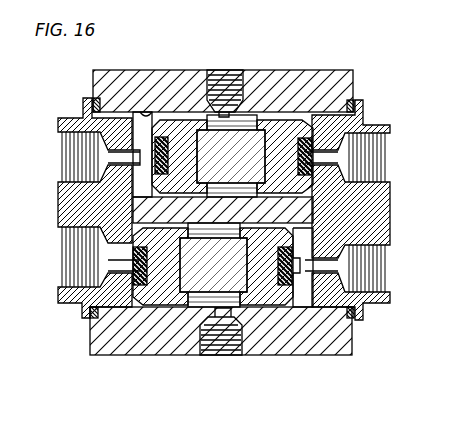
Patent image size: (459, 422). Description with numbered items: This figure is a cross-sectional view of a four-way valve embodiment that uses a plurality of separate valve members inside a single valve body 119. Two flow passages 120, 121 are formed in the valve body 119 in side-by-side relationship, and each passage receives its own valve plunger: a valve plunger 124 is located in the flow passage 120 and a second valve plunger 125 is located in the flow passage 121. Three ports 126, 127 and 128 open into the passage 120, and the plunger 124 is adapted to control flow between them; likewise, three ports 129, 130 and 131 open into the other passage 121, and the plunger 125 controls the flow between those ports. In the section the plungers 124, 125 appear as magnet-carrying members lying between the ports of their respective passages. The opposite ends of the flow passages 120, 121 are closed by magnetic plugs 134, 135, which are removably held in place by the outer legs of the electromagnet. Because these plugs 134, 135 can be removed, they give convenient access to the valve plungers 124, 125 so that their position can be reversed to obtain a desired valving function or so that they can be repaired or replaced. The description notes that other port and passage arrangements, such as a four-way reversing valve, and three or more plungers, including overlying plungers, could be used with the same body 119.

The valve body 119 is at (132, 70).
The flow passage 120 is at (302, 297).
The flow passage 121 is at (144, 114).
The valve plunger 124 is at (165, 288).
The valve plunger 125 is at (278, 131).
The port 126 is at (120, 263).
The port 127 is at (223, 310).
The port 128 is at (323, 262).
The port 129 is at (126, 162).
The port 130 is at (225, 70).
The port 131 is at (318, 162).
The magnetic plug 134 is at (382, 212).
The magnetic plug 135 is at (64, 208).